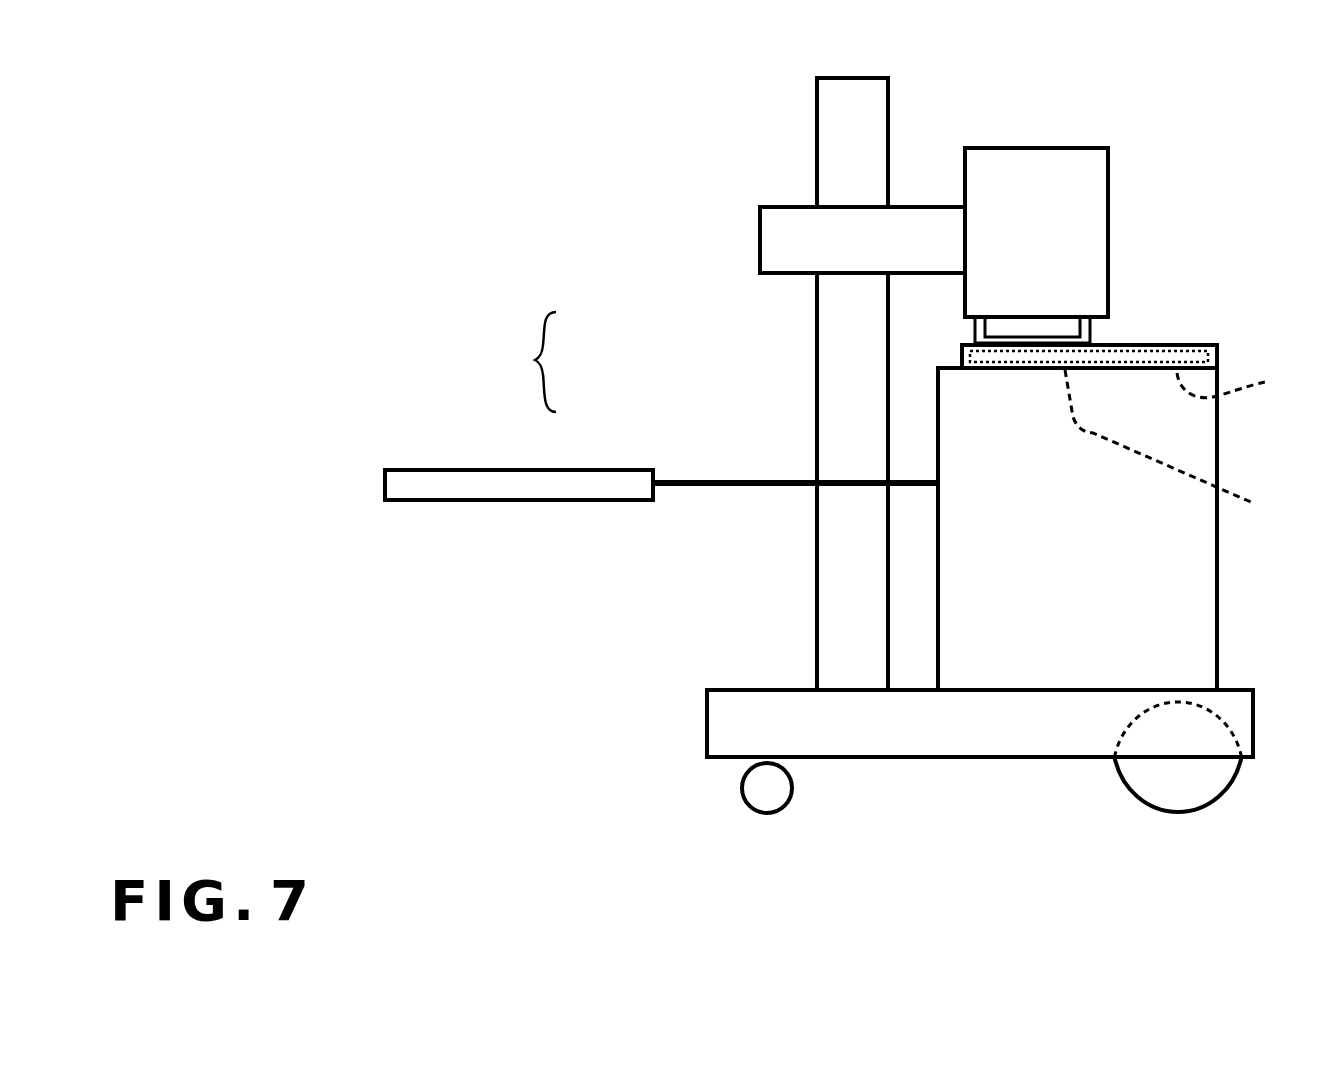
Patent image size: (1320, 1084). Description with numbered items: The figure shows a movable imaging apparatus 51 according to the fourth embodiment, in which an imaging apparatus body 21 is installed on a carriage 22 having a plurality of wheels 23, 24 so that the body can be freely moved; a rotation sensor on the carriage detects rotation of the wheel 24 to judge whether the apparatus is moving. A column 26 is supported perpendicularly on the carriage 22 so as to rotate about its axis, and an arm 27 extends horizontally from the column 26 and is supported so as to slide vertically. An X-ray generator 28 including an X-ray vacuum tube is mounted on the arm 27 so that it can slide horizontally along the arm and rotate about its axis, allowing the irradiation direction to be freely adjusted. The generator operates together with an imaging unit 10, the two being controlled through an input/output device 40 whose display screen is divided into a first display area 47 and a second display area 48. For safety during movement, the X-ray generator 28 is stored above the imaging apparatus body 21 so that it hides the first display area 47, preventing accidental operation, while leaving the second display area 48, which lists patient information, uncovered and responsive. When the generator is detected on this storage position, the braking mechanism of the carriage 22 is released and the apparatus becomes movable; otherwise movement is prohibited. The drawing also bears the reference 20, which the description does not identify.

The imaging unit 10 is at (600, 478).
The X-ray generating apparatus 20 is at (719, 376).
The imaging apparatus body 21 is at (938, 615).
The carriage 22 is at (972, 760).
The wheel 23 is at (752, 785).
The wheel 24 is at (1205, 780).
The column 26 is at (833, 148).
The arm 27 is at (917, 207).
The X-ray generator 28 is at (1065, 157).
The input/output device 40 is at (1130, 345).
The first display area 47 is at (1176, 451).
The second display area 48 is at (1239, 388).
The movable imaging apparatus 51 is at (523, 362).